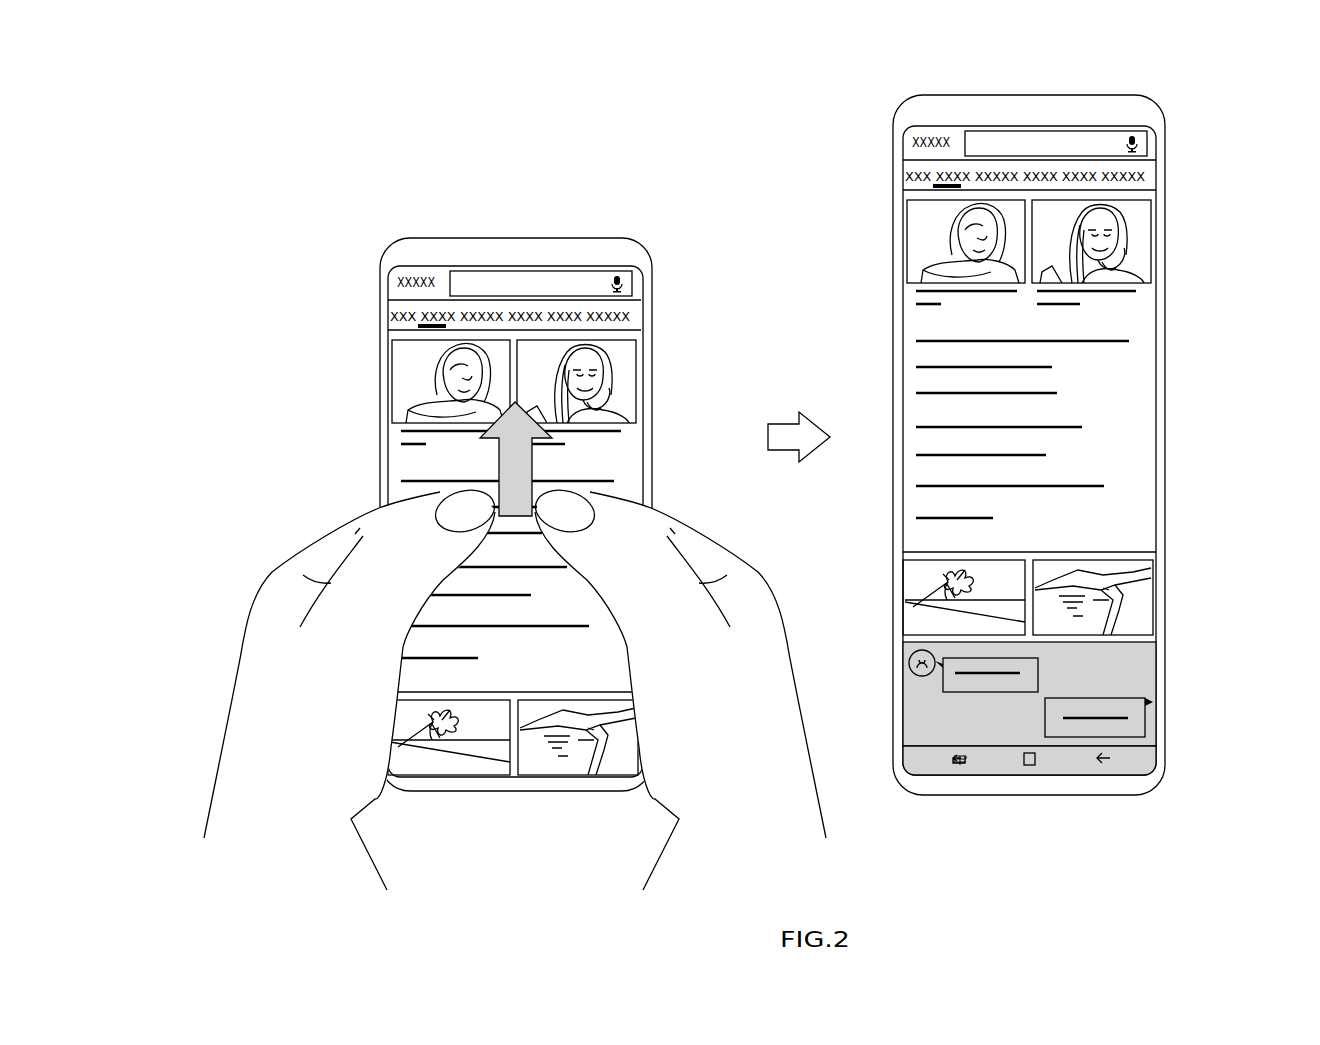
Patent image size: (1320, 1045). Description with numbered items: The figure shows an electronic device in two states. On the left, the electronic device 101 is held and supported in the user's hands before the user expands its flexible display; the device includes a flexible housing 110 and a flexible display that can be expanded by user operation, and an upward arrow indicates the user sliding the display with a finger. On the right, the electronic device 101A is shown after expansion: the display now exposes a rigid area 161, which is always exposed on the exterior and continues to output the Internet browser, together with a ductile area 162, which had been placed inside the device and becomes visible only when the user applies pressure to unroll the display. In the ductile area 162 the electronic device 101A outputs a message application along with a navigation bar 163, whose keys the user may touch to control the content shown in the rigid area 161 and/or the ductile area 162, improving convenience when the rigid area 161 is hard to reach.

The electronic device 101 is at (480, 480).
The electronic device 101A is at (1028, 95).
The flexible housing 110 is at (400, 253).
The rigid area 161 is at (1141, 418).
The ductile area 162 is at (1143, 673).
The navigation bar 163 is at (1065, 760).